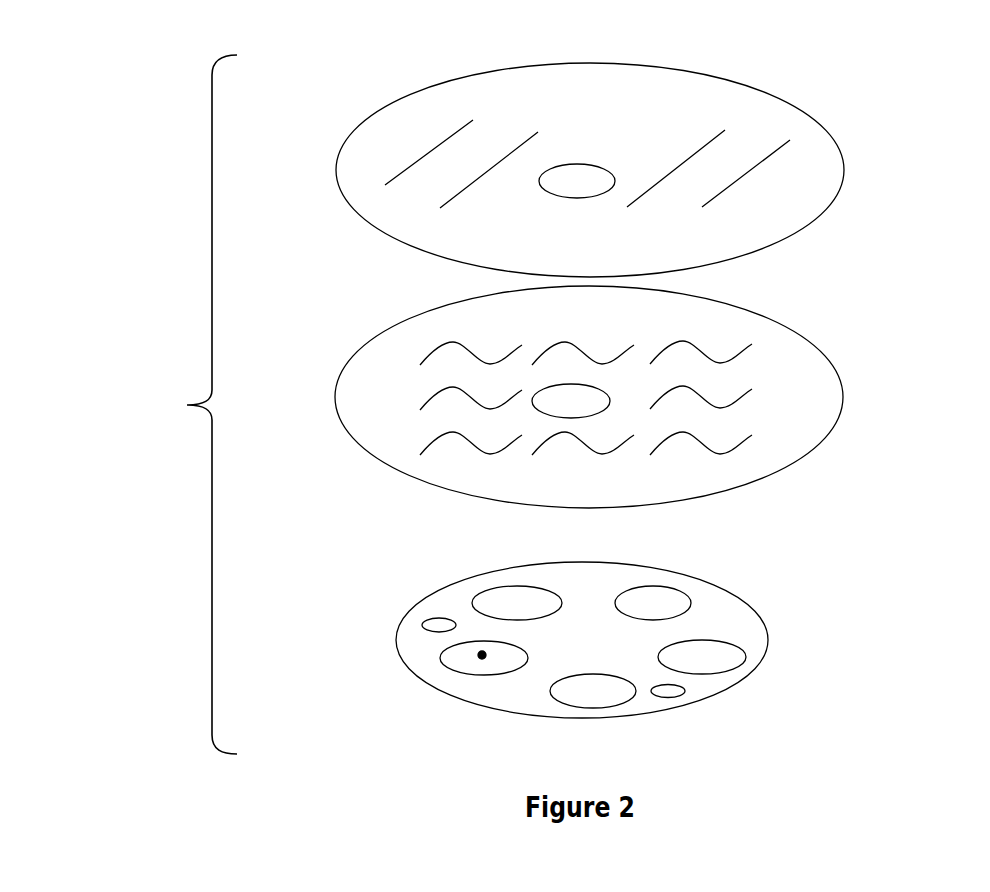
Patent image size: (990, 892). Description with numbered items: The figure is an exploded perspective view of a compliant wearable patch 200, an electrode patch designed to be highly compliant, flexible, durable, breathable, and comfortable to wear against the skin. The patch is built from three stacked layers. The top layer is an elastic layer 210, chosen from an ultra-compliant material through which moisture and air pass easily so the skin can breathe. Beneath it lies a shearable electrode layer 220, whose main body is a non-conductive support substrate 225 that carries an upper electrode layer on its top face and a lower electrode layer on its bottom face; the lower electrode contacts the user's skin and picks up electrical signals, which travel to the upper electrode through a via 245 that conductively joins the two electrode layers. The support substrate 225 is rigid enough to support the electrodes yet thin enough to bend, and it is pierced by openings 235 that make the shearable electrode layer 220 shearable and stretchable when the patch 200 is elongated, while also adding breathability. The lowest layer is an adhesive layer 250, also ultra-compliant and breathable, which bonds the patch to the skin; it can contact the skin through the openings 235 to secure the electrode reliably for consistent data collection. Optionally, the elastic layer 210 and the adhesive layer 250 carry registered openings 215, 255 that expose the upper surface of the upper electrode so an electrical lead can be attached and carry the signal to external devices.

The compliant wearable patch 200 is at (186, 404).
The elastic layer 210 is at (803, 162).
The registered opening 215 is at (572, 177).
The adhesive layer 250 is at (797, 377).
The registered opening 255 is at (560, 400).
The shearable electrode layer 220 is at (758, 596).
The non-conductive support substrate 225 is at (448, 605).
The openings 235 is at (482, 655).
The via 245 is at (683, 692).